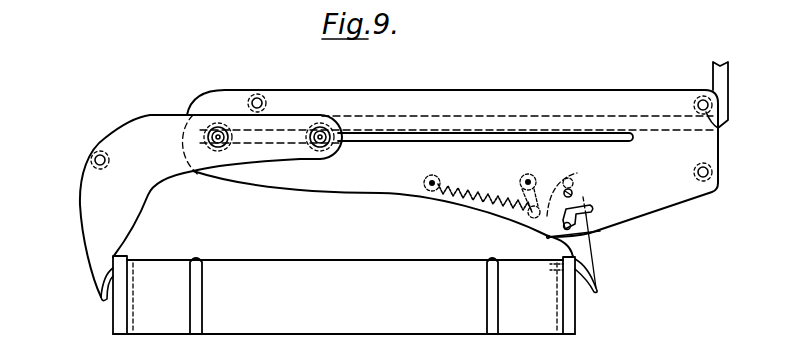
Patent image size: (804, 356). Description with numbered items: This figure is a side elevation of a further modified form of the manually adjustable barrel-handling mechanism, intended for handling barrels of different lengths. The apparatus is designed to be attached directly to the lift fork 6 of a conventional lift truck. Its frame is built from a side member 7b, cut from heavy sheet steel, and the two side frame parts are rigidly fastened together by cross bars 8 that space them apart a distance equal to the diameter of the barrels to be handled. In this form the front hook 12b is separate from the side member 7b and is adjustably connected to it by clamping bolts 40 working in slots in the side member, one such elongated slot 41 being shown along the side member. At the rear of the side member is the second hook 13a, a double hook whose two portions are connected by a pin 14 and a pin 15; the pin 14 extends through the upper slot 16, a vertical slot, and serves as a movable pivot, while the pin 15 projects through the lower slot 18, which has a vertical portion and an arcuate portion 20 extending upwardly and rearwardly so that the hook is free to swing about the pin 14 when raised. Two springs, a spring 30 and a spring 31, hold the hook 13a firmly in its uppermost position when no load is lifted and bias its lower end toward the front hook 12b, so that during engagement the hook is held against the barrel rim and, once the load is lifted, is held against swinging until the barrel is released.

The lift fork 6 is at (729, 76).
The side member 7b is at (437, 90).
The cross bars 8 is at (258, 97).
The front hook 12b is at (84, 262).
The hook 13a is at (595, 267).
The pin 14 is at (572, 191).
The pin 15 is at (598, 233).
The upper slot 16 is at (580, 188).
The slot 18 is at (560, 224).
The arcuate portion 20 is at (593, 208).
The spring 30 is at (521, 187).
The spring 31 is at (461, 204).
The clamping bolts 40 is at (219, 127).
The slot 41 is at (525, 127).